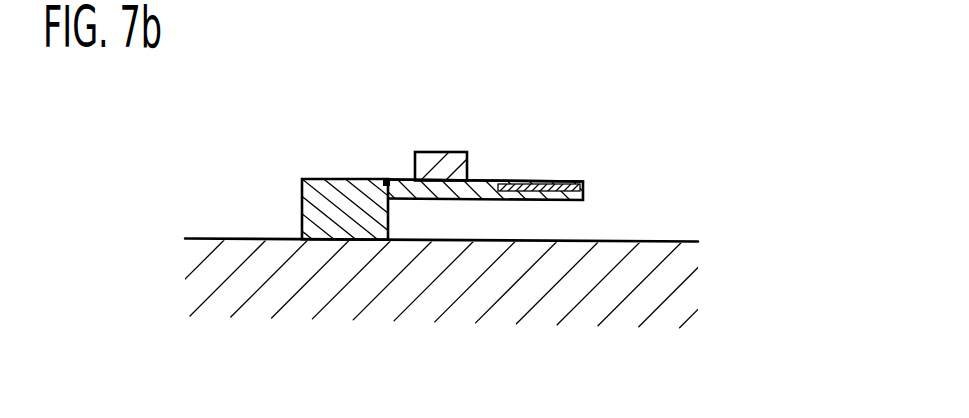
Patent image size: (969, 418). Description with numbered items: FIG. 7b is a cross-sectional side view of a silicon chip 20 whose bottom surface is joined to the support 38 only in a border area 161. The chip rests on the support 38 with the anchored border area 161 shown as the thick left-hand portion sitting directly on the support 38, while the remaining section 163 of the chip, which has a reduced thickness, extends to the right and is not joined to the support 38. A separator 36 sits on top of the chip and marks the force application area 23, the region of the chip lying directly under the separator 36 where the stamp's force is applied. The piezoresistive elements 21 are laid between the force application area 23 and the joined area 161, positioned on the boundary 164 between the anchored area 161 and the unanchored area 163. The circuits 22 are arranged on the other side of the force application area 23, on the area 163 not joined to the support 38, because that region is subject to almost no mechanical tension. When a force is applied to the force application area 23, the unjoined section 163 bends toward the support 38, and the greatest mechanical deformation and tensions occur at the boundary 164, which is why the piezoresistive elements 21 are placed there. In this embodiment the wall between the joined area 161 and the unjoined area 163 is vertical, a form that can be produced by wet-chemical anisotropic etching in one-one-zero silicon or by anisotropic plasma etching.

The silicon chip 20 is at (605, 188).
The piezoresistive elements 21 is at (388, 179).
The circuits 22 is at (542, 183).
The force application area 23 is at (448, 177).
The separator 36 is at (428, 158).
The support 38 is at (473, 285).
The border area joined to the support 161 is at (327, 240).
The area not joined to the support 163 is at (522, 204).
The boundary 164 is at (383, 179).